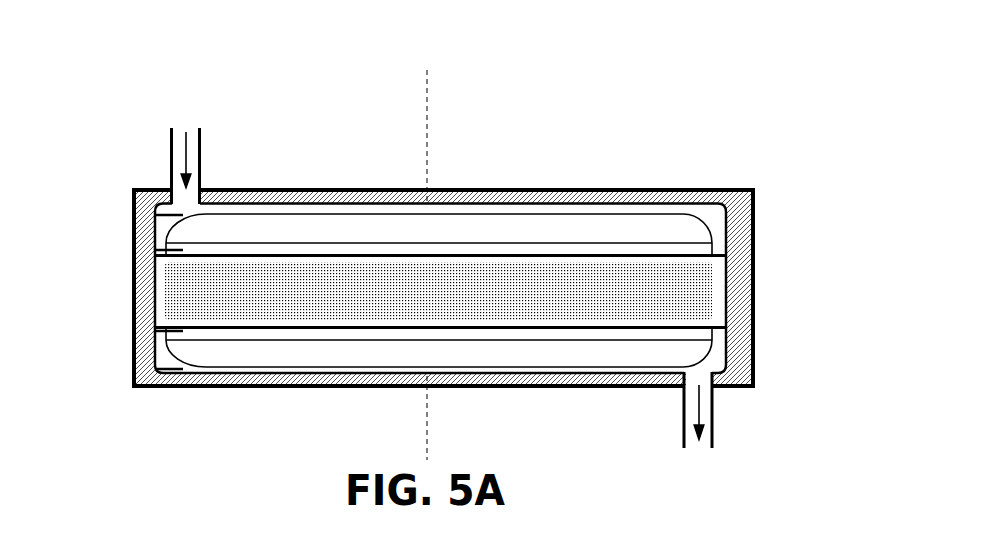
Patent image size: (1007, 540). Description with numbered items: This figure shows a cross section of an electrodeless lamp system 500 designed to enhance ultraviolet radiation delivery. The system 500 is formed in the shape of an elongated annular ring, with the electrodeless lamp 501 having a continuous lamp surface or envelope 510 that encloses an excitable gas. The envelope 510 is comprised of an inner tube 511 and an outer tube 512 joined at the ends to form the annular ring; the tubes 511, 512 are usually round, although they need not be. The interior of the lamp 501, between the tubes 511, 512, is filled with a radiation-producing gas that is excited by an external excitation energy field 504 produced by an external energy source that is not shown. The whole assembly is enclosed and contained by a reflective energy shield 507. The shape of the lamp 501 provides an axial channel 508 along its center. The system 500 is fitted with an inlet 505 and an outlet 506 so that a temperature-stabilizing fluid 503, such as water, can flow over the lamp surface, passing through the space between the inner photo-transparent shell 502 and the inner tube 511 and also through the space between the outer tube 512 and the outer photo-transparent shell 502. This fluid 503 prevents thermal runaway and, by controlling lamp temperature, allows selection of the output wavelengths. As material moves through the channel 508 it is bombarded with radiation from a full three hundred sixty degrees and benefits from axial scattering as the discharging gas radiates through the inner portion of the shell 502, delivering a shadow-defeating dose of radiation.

The electrodeless lamp system 500 is at (782, 107).
The electrodeless lamp 501 is at (350, 230).
The photo-transparent shell 502 is at (408, 204).
The fluid 503 is at (183, 369).
The excitation energy field 504 is at (587, 202).
The inlet 505 is at (187, 120).
The outlet 506 is at (702, 457).
The reflective energy shield 507 is at (756, 302).
The axial channel 508 is at (403, 293).
The lamp envelope 510 is at (452, 217).
The inner tube 511 is at (712, 333).
The outer tube 512 is at (713, 360).